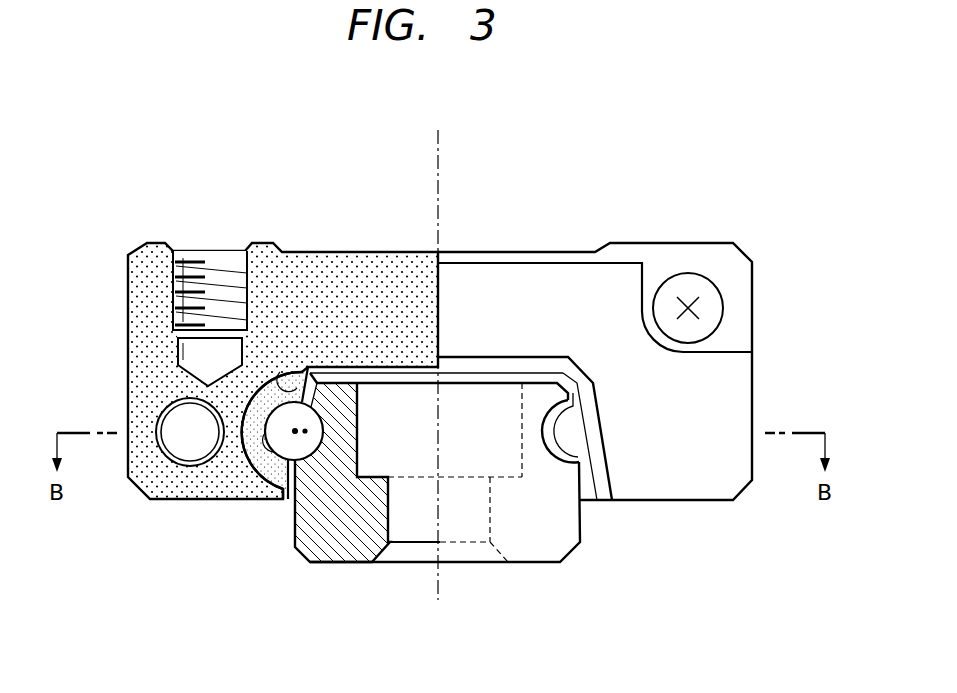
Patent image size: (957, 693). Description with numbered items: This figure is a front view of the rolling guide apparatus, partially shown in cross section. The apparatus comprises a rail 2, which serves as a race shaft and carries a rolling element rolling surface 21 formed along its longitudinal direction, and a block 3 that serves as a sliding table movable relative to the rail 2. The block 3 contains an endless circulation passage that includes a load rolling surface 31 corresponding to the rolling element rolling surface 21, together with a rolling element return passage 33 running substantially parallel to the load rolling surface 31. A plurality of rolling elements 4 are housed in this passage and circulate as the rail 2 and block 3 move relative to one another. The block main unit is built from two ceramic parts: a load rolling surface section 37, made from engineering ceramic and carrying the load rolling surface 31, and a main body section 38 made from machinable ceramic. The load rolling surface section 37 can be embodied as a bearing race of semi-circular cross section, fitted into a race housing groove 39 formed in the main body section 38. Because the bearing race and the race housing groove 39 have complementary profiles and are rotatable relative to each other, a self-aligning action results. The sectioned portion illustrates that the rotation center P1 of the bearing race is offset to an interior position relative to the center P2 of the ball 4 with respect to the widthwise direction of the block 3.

The rail 2 is at (528, 575).
The block 3 is at (564, 238).
The rolling elements 4 is at (305, 462).
The rolling element rolling surface 21 is at (557, 437).
The load rolling surface 31 is at (295, 431).
The rolling element return passage 33 is at (180, 412).
The load rolling surface section 37 is at (278, 478).
The main body section 38 is at (150, 294).
The race housing groove 39 is at (294, 402).
The rotation center of the bearing race P1 is at (305, 431).
The center of the rolling body P2 is at (295, 431).